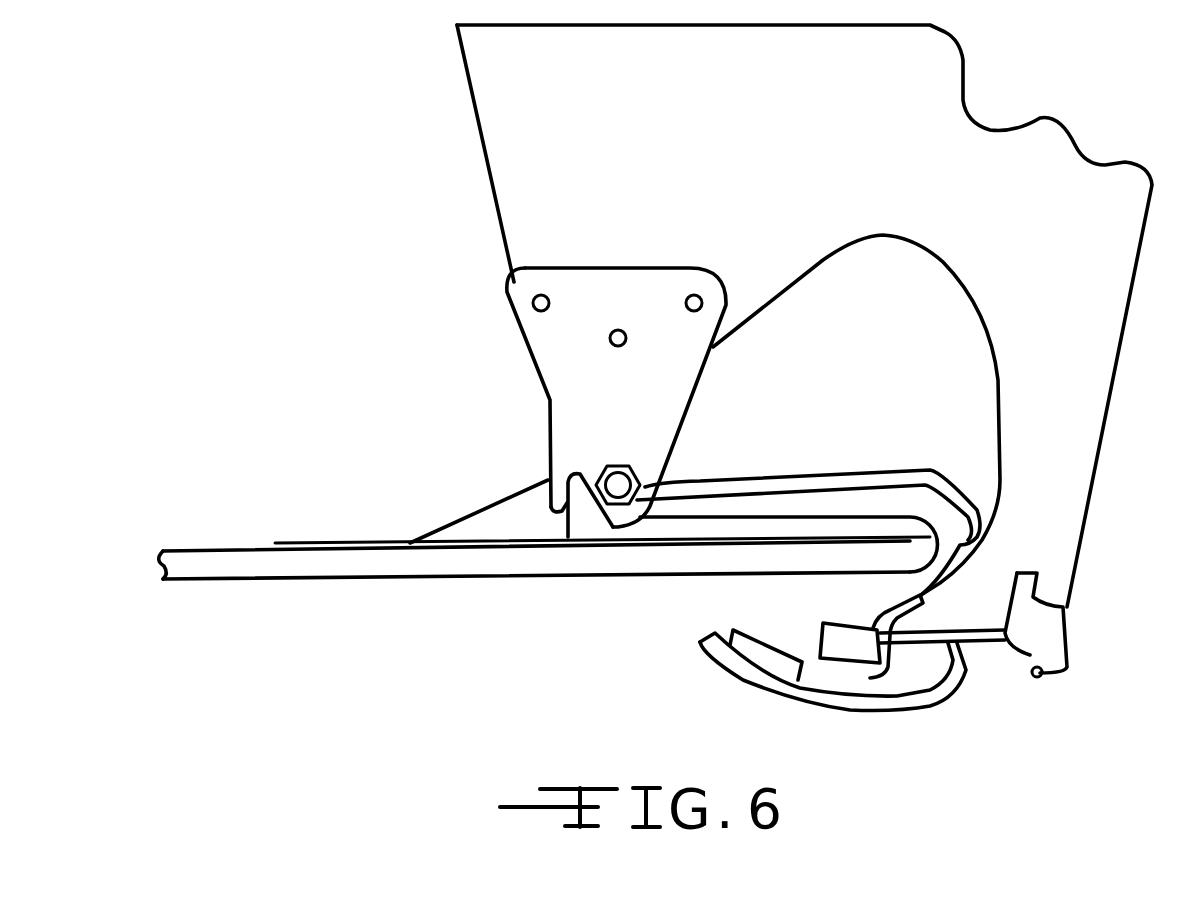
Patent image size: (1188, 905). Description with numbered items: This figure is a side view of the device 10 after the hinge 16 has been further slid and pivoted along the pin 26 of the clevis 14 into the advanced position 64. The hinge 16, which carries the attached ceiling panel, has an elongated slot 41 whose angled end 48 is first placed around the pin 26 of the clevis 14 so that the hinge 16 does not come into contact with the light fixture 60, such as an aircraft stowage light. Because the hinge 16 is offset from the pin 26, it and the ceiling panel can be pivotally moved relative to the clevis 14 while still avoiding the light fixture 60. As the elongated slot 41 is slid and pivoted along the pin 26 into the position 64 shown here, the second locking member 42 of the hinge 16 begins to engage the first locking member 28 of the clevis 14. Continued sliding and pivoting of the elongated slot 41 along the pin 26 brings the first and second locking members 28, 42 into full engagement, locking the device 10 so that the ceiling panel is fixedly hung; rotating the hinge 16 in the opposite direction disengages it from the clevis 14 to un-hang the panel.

The device 10 is at (417, 176).
The clevis 14 is at (658, 425).
The hinge 16 is at (328, 550).
The pin 26 is at (618, 472).
The first locking member 28 is at (567, 483).
The elongated slot 41 is at (813, 515).
The second locking member 42 is at (585, 523).
The angled end 48 is at (960, 487).
The light fixture 60 is at (870, 710).
The position 64 is at (441, 481).